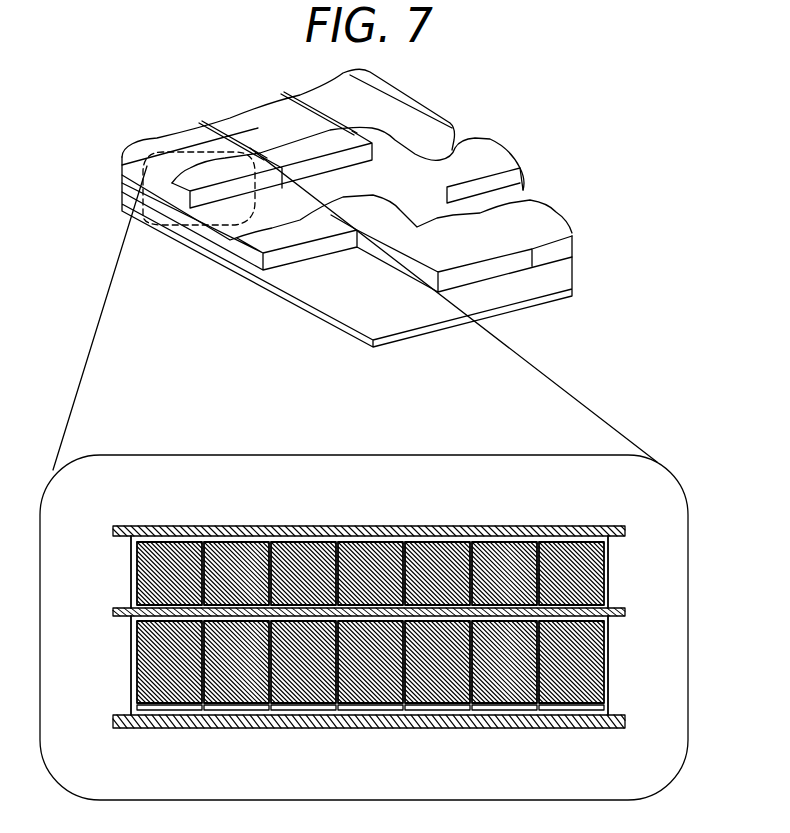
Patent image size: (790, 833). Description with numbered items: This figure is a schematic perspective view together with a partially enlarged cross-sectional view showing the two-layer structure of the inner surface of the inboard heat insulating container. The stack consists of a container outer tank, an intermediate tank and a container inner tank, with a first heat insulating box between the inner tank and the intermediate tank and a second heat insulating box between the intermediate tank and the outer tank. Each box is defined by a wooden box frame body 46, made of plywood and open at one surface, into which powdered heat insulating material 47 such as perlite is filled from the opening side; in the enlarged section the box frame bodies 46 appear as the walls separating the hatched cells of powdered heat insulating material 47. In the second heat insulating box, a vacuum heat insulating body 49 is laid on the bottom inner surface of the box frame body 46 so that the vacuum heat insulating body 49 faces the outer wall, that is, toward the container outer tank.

The box frame body 46 is at (608, 556).
The powdered heat insulating material 47 is at (625, 672).
The vacuum heat insulating body 49 is at (585, 755).